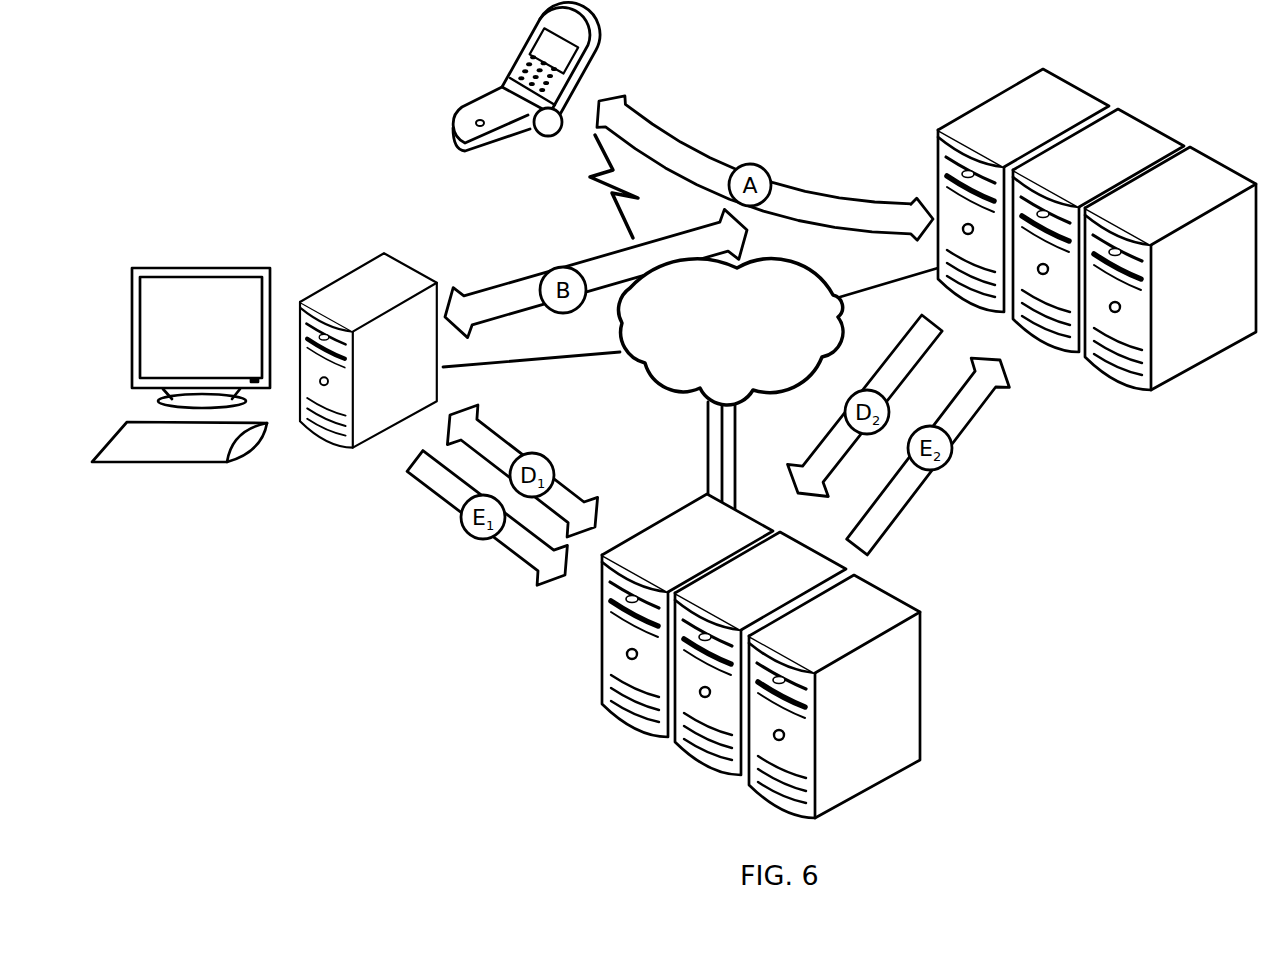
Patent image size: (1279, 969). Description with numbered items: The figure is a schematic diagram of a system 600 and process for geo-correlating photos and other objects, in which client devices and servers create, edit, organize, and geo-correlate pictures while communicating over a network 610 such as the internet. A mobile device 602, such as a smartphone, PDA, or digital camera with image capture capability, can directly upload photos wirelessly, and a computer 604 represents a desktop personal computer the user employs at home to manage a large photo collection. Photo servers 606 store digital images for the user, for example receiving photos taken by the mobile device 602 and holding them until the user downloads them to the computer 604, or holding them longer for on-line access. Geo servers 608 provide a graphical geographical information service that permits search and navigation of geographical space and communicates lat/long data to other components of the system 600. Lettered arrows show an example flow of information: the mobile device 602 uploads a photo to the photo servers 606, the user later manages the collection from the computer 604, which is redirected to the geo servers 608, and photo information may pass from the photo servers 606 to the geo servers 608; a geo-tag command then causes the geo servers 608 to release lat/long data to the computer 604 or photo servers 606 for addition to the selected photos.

The system 600 is at (362, 672).
The mobile device 602 is at (460, 148).
The computer 604 is at (196, 462).
The photo servers 606 is at (938, 163).
The geo servers 608 is at (920, 702).
The network 610 is at (731, 332).